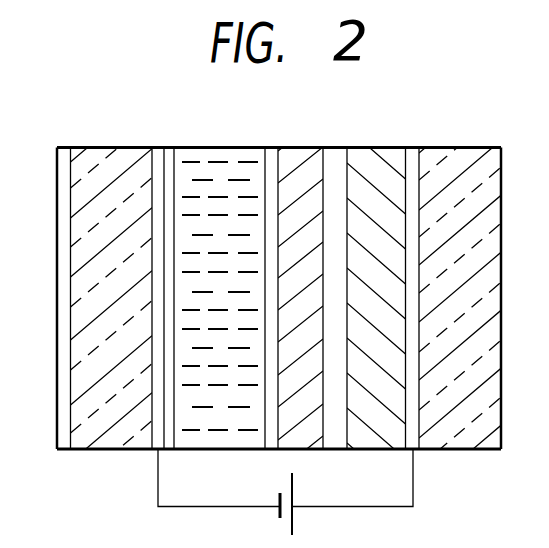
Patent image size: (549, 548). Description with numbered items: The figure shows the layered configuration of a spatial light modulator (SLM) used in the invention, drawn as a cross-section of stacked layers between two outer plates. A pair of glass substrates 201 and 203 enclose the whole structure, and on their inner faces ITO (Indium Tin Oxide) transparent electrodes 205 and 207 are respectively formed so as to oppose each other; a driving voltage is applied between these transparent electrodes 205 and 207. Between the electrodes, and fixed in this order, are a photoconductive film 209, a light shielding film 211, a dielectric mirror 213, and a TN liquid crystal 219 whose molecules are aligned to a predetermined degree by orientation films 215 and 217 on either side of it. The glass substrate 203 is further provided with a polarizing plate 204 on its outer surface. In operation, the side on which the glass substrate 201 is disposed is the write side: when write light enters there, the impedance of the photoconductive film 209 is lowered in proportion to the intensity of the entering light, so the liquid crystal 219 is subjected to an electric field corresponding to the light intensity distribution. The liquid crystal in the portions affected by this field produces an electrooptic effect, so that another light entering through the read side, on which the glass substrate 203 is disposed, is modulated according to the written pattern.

The glass substrate 201 is at (457, 147).
The glass substrate 203 is at (111, 147).
The polarizing plate 204 is at (62, 147).
The ITO transparent electrode 205 is at (412, 147).
The ITO transparent electrode 207 is at (154, 147).
The photoconductive film 209 is at (373, 147).
The light shielding film 211 is at (333, 147).
The dielectric mirror 213 is at (297, 147).
The orientation film 215 is at (271, 147).
The orientation film 217 is at (178, 147).
The TN liquid crystal 219 is at (222, 147).